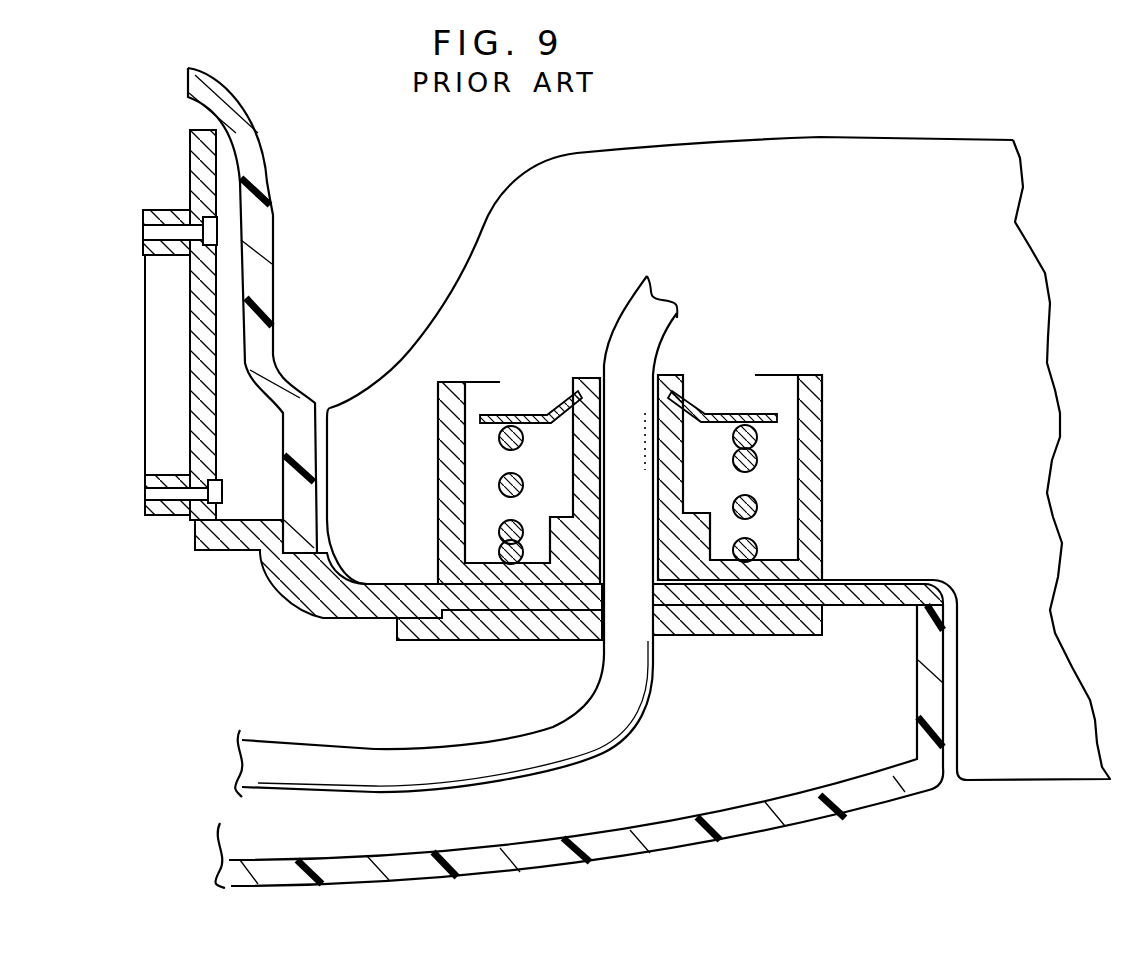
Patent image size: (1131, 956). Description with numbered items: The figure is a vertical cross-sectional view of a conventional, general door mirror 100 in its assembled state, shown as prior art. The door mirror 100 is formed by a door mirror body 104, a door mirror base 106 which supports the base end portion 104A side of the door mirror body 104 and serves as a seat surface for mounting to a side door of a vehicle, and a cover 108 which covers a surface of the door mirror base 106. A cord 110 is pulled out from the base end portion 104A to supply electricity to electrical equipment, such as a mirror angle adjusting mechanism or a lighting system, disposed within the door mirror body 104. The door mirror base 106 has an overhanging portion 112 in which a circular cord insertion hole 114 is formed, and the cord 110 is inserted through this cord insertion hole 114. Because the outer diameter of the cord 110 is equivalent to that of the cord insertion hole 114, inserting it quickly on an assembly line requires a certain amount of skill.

The door mirror 100 is at (627, 127).
The door mirror body 104 is at (822, 137).
The base end portion 104A is at (362, 413).
The door mirror base 106 is at (290, 606).
The cover 108 is at (263, 238).
The cord 110 is at (313, 757).
The overhanging portion 112 is at (465, 632).
The cord insertion hole 114 is at (604, 622).